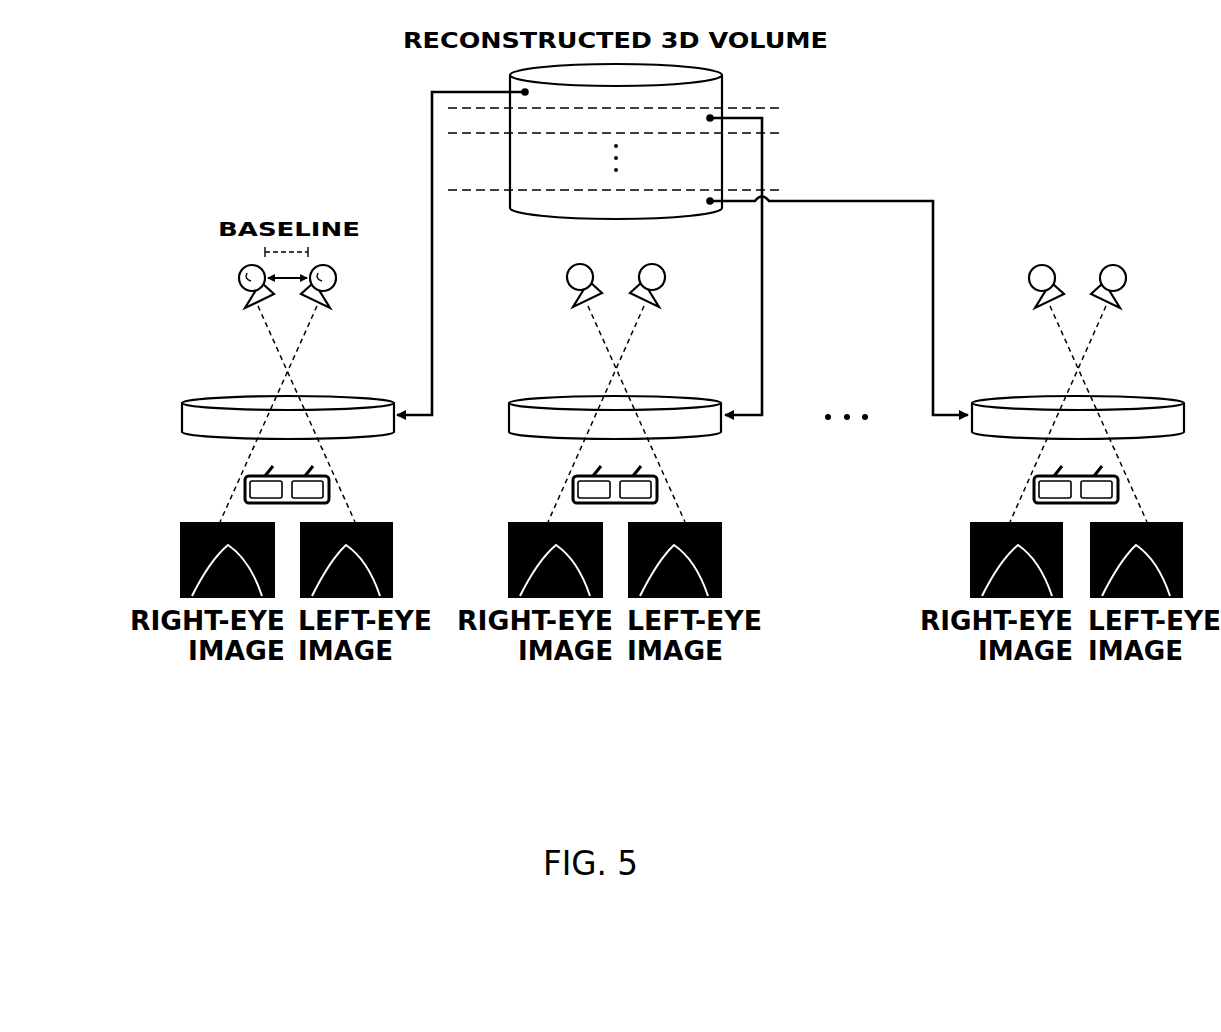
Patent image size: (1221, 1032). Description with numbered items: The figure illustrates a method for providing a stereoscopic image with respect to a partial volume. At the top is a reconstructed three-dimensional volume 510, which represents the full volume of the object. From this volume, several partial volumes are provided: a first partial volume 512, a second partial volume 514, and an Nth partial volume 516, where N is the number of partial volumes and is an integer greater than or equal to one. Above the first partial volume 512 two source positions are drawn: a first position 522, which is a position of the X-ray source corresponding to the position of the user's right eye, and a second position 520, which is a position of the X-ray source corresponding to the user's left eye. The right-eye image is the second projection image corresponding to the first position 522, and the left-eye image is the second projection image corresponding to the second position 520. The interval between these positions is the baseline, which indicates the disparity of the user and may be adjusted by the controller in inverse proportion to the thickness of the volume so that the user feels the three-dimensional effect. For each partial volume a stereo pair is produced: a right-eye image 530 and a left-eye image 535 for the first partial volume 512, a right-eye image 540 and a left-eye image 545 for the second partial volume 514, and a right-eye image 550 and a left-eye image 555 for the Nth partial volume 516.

The reconstructed 3D volume 510 is at (723, 89).
The first partial volume 512 is at (314, 402).
The second partial volume 514 is at (643, 400).
The Nth partial volume 516 is at (1103, 401).
The second position 520 is at (239, 277).
The first position 522 is at (336, 278).
The right-eye image 530 is at (222, 520).
The left-eye image 535 is at (352, 520).
The right-eye image 540 is at (550, 520).
The left-eye image 545 is at (678, 520).
The right-eye image 550 is at (1012, 520).
The left-eye image 555 is at (1140, 520).